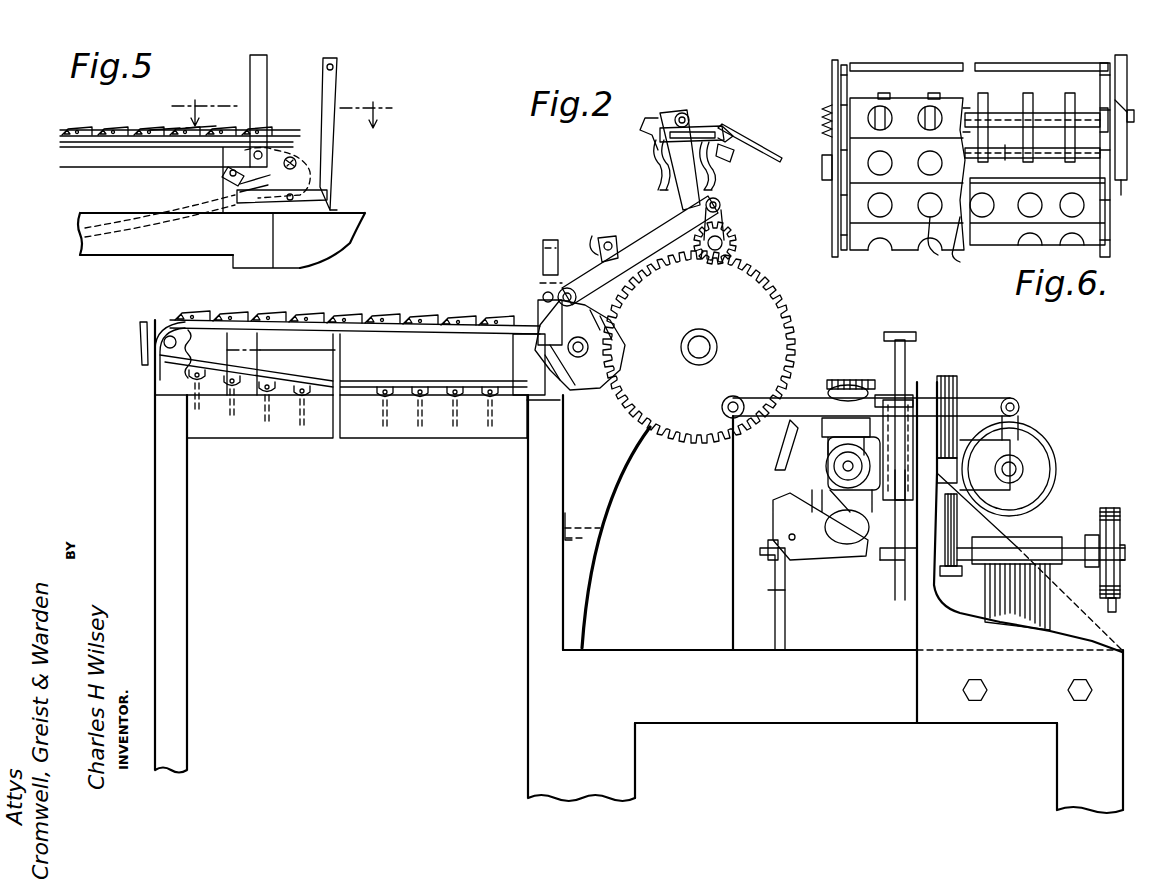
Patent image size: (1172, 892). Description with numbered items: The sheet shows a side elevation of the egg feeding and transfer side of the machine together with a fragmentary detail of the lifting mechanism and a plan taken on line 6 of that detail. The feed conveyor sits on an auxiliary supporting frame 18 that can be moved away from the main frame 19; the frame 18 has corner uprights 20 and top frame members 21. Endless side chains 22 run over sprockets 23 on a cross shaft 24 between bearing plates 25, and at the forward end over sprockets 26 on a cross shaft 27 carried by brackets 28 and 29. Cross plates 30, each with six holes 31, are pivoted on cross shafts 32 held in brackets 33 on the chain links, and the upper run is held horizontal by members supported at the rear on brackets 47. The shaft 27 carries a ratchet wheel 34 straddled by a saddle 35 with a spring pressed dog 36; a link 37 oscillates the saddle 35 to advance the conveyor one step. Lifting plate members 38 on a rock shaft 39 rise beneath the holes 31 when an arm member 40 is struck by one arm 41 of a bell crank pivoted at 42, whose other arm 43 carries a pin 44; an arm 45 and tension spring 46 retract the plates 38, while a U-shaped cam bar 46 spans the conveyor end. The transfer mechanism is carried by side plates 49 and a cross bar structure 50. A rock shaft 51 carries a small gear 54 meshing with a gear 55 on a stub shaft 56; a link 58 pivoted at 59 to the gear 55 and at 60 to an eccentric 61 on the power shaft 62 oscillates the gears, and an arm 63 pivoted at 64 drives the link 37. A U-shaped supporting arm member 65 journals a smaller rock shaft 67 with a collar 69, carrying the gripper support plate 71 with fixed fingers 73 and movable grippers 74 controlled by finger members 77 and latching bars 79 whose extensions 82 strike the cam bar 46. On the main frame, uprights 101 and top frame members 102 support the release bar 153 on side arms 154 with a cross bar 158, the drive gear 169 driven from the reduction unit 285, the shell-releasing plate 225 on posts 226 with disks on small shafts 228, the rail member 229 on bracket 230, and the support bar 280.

In FIG. 5, the section line 6— 6 is at (282, 101).
In FIG. 2, the auxiliary supporting frame 18 is at (285, 432).
In FIG. 2, the main frame 19 is at (768, 725).
In FIG. 2, the corner uprights 20 is at (187, 556).
In FIG. 2, the top frame members 21 is at (433, 432).
In FIG. 5, the endless side chains 22 is at (122, 133).
In FIG. 6, the endless side chains 22 is at (1100, 248).
In FIG. 2, the endless side chains 22 is at (400, 320).
In FIG. 2, the sprockets 23 is at (200, 340).
In FIG. 2, the cross shaft 24 is at (168, 335).
In FIG. 2, the bearing plates 25 is at (158, 378).
In FIG. 5, the sprockets 26 is at (312, 165).
In FIG. 5, the cross shaft 27 is at (296, 160).
In FIG. 6, the cross shaft 27 is at (1003, 112).
In FIG. 2, the cross shaft 27 is at (580, 398).
In FIG. 6, the bracket 28 is at (1112, 108).
In FIG. 2, the bracket 28 is at (512, 362).
In FIG. 5, the bracket 29 is at (236, 186).
In FIG. 6, the bracket 29 is at (830, 99).
In FIG. 5, the cross plates 30 is at (92, 132).
In FIG. 6, the cross plates 30 is at (1082, 68).
In FIG. 2, the cross plates 30 is at (485, 320).
In FIG. 6, the holes 31 is at (960, 262).
In FIG. 5, the cross shaft 32 is at (270, 135).
In FIG. 5, the brackets 33 is at (182, 130).
In FIG. 2, the ratchet wheel 34 is at (543, 410).
In FIG. 2, the saddle 35 is at (540, 300).
In FIG. 2, the spring pressed dog 36 is at (556, 290).
In FIG. 2, the link 37 is at (628, 270).
In FIG. 5, the lifting plate members 38 is at (248, 205).
In FIG. 6, the lifting plate members 38 is at (930, 93).
In FIG. 5, the rock shaft 39 is at (226, 170).
In FIG. 6, the rock shaft 39 is at (1005, 160).
In FIG. 5, the arm member 40 is at (228, 200).
In FIG. 6, the arm member 40 is at (1125, 180).
In FIG. 5, the bell crank arm 41 is at (266, 205).
In FIG. 5, the pivot 42 is at (292, 202).
In FIG. 5, the bell crank arm 43 is at (324, 80).
In FIG. 6, the bell crank arm 43 is at (1126, 68).
In FIG. 2, the bell crank arm 43 is at (602, 236).
In FIG. 5, the pin 44 is at (334, 64).
In FIG. 6, the arm 45 is at (822, 170).
In FIG. 6, the tension spring / cam bar 46 is at (824, 125).
In FIG. 2, the tension spring / cam bar 46 is at (374, 340).
In FIG. 5, the upstanding brackets 47 is at (82, 165).
In FIG. 2, the upstanding brackets 47 is at (255, 365).
In FIG. 2, the side plates 49 is at (598, 506).
In FIG. 2, the cross bar connecting structure 50 is at (601, 531).
In FIG. 2, the rock shaft 51 is at (714, 252).
In FIG. 2, the small gear 54 is at (738, 248).
In FIG. 2, the gear 55 is at (764, 325).
In FIG. 2, the stub shaft 56 is at (694, 336).
In FIG. 2, the link 58 is at (728, 418).
In FIG. 2, the pivot connection 59 is at (700, 425).
In FIG. 2, the pivot connection 60 is at (1016, 412).
In FIG. 2, the eccentric 61 is at (1020, 450).
In FIG. 2, the power shaft 62 is at (1022, 468).
In FIG. 2, the arm 63 is at (726, 225).
In FIG. 2, the pivot connection 64 is at (722, 205).
In FIG. 2, the supporting arm member 65 is at (680, 196).
In FIG. 2, the smaller rock shaft 67 is at (698, 125).
In FIG. 2, the collar 69 is at (682, 112).
In FIG. 2, the gripper support plate 71 is at (662, 155).
In FIG. 2, the fixed gripper fingers 73 is at (656, 180).
In FIG. 2, the movable gripper member 74 is at (714, 172).
In FIG. 2, the finger member 77 is at (768, 158).
In FIG. 2, the latching bar element 79 is at (730, 132).
In FIG. 2, the latch bar extension 82 is at (642, 122).
In FIG. 2, the uprights 101 is at (630, 786).
In FIG. 2, the top frame members 102 is at (876, 720).
In FIG. 2, the release bar 153 is at (903, 332).
In FIG. 2, the side arm members 154 is at (912, 370).
In FIG. 2, the cross bar 158 is at (888, 394).
In FIG. 2, the gear 169 is at (958, 376).
In FIG. 2, the supporting plate 225 is at (895, 545).
In FIG. 2, the posts 226 is at (905, 566).
In FIG. 2, the small shaft 228 is at (855, 560).
In FIG. 2, the rail member 229 is at (770, 562).
In FIG. 2, the bracket 230 is at (768, 588).
In FIG. 2, the support bar 280 is at (1122, 556).
In FIG. 2, the speed reduction unit 285 is at (1118, 520).